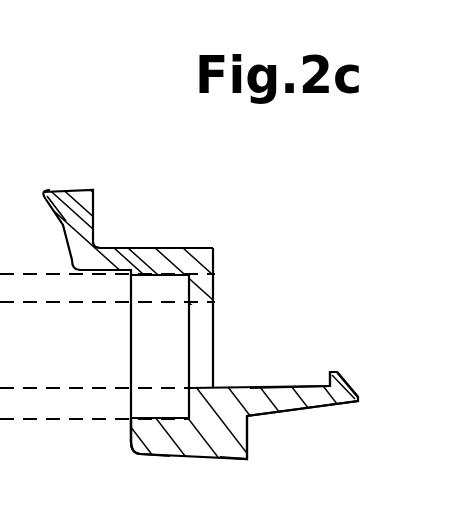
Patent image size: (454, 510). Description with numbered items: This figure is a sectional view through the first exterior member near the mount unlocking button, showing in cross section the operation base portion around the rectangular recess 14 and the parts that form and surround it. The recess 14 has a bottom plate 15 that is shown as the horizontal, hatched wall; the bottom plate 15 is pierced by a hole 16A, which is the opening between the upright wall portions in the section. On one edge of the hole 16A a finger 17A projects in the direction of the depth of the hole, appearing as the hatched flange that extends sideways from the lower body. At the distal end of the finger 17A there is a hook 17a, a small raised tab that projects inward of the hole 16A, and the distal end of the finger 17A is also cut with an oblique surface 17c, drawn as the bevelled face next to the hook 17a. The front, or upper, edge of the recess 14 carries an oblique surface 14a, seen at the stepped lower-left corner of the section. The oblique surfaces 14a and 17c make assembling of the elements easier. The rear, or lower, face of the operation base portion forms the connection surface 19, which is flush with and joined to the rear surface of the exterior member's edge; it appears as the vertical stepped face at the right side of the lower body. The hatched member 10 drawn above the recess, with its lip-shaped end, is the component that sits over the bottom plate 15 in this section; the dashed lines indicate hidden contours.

The sealing lip member 10 is at (84, 190).
The hole 16A is at (194, 294).
The bottom plate 15 is at (190, 402).
The recess 14 is at (154, 418).
The oblique surface 14a is at (124, 421).
The finger 17A is at (297, 413).
The hook 17a is at (334, 371).
The oblique surface 17c is at (359, 385).
The connection surface 19 is at (251, 444).